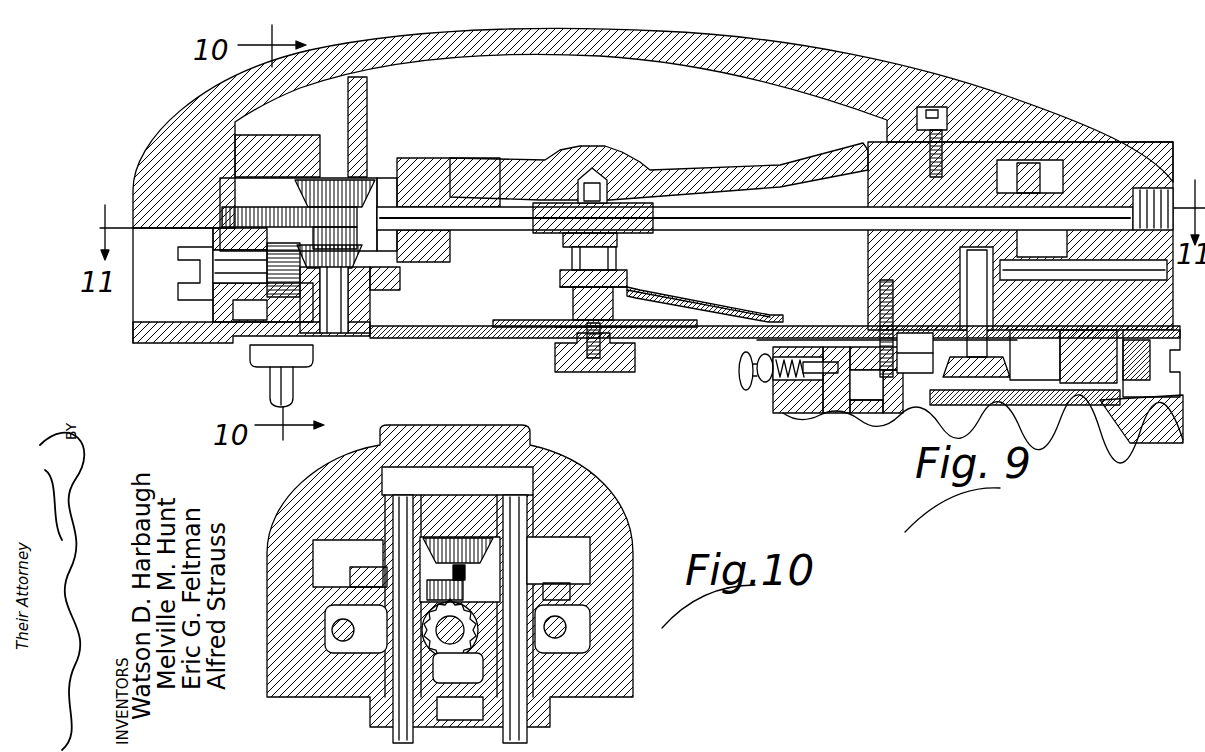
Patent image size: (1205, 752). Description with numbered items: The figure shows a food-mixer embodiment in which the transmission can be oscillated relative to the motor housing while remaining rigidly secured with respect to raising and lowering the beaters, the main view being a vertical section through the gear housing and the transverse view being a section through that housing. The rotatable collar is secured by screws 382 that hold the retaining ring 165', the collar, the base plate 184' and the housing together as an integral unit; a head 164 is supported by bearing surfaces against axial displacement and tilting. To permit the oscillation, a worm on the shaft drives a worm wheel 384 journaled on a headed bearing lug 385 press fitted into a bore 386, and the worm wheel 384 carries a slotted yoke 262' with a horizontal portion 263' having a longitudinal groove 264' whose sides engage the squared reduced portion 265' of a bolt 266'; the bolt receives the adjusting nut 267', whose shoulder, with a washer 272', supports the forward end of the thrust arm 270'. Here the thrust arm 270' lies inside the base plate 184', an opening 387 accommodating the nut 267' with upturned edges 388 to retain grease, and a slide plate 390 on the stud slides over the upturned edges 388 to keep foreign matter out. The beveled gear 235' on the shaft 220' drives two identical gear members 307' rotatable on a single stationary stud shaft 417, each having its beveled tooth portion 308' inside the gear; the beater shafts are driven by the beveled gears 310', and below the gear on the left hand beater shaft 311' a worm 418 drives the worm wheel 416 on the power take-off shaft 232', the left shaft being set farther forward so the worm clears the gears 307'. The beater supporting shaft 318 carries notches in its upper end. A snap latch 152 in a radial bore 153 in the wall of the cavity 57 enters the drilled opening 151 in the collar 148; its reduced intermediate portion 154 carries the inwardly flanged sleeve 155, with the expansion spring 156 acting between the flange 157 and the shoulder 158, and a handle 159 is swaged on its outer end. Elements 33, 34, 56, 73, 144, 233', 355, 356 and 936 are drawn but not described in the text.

In FIG. 9, the support 33 is at (1180, 445).
In FIG. 9, the screw 34 is at (1035, 138).
In FIG. 9, the latch member 56 is at (1147, 343).
In FIG. 9, the cavity 57 is at (890, 397).
In FIG. 9, the pedestal post 73 is at (992, 398).
In FIG. 9, the base 144 is at (1110, 413).
In FIG. 9, the collar 148 is at (1088, 345).
In FIG. 9, the drilled opening 151 is at (832, 410).
In FIG. 9, the snap latch 152 is at (797, 413).
In FIG. 9, the radial bore 153 is at (786, 348).
In FIG. 9, the reduced intermediate portion 154 is at (747, 388).
In FIG. 9, the inwardly flanged sleeve 155 is at (800, 362).
In FIG. 9, the expansion spring 156 is at (775, 394).
In FIG. 9, the flange 157 is at (742, 372).
In FIG. 9, the shoulder 158 is at (838, 350).
In FIG. 9, the handle 159 is at (738, 360).
In FIG. 9, the head 164 is at (915, 361).
In FIG. 9, the retaining ring 165' is at (874, 385).
In FIG. 9, the base plate 184' is at (656, 311).
In FIG. 9, the shaft 220' is at (775, 220).
In FIG. 10, the power take-off shaft 232' is at (450, 584).
In FIG. 9, the bracket 233' is at (175, 273).
In FIG. 9, the beveled gear 235' is at (653, 128).
In FIG. 9, the slotted yoke 262' is at (552, 242).
In FIG. 9, the horizontal portion 263' is at (560, 278).
In FIG. 9, the longitudinal groove 264' is at (623, 253).
In FIG. 9, the squared reduced portion 265' is at (562, 269).
In FIG. 9, the bolt 266' is at (555, 303).
In FIG. 9, the adjusting nut 267' is at (595, 365).
In FIG. 9, the thrust arm 270' is at (703, 299).
In FIG. 9, the washer 272' is at (701, 289).
In FIG. 9, the gear members 307' is at (351, 205).
In FIG. 10, the gear members 307' is at (500, 550).
In FIG. 9, the beveled tooth portion 308' is at (365, 252).
In FIG. 10, the beveled tooth portion 308' is at (507, 579).
In FIG. 9, the gears 310' is at (308, 214).
In FIG. 10, the gears 310' is at (458, 595).
In FIG. 9, the left hand beater shaft 311' is at (245, 394).
In FIG. 10, the left hand beater shaft 311' is at (454, 619).
In FIG. 10, the beater supporting shaft 318 is at (446, 722).
In FIG. 9, the bushing 355 is at (1030, 168).
In FIG. 9, the bushing 356 is at (915, 353).
In FIG. 9, the screws 382 is at (880, 300).
In FIG. 9, the worm wheel 384 is at (688, 170).
In FIG. 9, the headed bearing lug 385 is at (625, 170).
In FIG. 9, the bore 386 is at (548, 170).
In FIG. 9, the opening 387 is at (562, 350).
In FIG. 9, the upturned edges 388 is at (560, 331).
In FIG. 9, the slide plate 390 is at (493, 322).
In FIG. 9, the worm wheel 416 is at (282, 300).
In FIG. 10, the worm wheel 416 is at (452, 641).
In FIG. 9, the stationary stud shaft 417 is at (355, 330).
In FIG. 9, the worm 418 is at (310, 355).
In FIG. 10, the worm 418 is at (378, 600).
In FIG. 9, the plate 936 is at (930, 398).